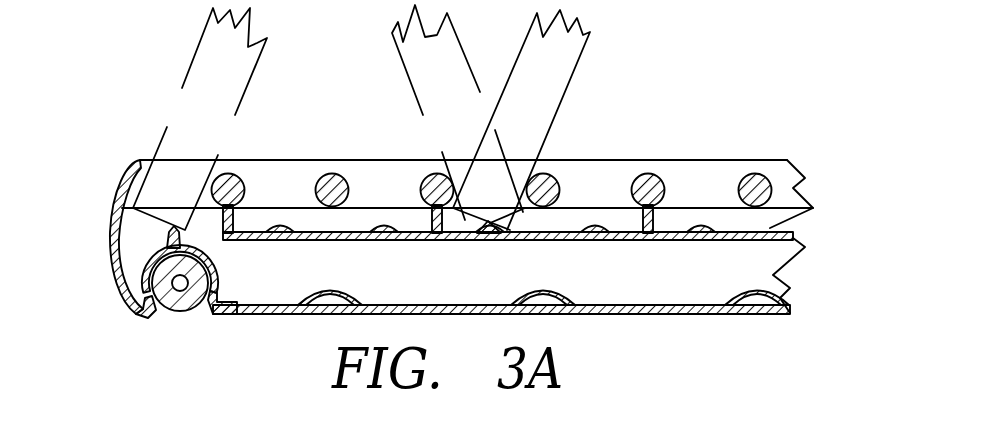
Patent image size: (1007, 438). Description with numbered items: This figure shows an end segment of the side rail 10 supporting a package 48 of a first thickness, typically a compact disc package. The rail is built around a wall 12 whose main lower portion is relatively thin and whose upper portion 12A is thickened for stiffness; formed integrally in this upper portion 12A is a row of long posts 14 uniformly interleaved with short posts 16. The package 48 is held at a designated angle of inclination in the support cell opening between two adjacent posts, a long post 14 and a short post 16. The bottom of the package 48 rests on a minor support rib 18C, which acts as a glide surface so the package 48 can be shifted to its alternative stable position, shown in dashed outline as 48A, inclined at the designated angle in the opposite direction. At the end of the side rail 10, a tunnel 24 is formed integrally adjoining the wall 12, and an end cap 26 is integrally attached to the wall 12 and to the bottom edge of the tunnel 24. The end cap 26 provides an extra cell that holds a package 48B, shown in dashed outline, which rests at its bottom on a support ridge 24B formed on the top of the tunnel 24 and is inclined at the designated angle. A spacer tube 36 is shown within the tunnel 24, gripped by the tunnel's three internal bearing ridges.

The side rail 10 is at (140, 275).
The wall 12 is at (290, 283).
The upper portion 12A is at (362, 180).
The long post 14 is at (428, 173).
The short post 16 is at (553, 177).
The minor support rib 18C is at (488, 232).
The tunnel 24 is at (143, 288).
The support ridge 24B is at (168, 233).
The end cap 26 is at (113, 207).
The spacer tube 36 is at (185, 303).
The package 48 is at (558, 83).
The alternative stable position of package 48A is at (413, 83).
The package in end cell 48B is at (192, 80).